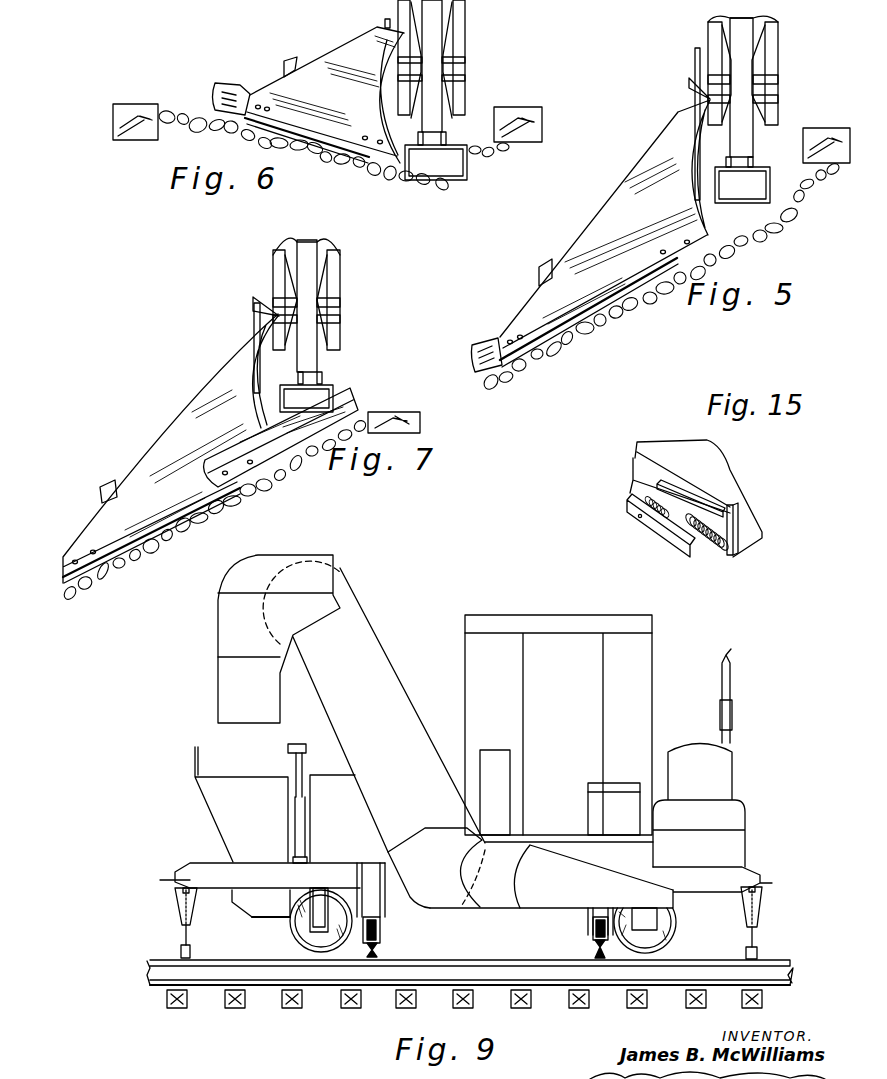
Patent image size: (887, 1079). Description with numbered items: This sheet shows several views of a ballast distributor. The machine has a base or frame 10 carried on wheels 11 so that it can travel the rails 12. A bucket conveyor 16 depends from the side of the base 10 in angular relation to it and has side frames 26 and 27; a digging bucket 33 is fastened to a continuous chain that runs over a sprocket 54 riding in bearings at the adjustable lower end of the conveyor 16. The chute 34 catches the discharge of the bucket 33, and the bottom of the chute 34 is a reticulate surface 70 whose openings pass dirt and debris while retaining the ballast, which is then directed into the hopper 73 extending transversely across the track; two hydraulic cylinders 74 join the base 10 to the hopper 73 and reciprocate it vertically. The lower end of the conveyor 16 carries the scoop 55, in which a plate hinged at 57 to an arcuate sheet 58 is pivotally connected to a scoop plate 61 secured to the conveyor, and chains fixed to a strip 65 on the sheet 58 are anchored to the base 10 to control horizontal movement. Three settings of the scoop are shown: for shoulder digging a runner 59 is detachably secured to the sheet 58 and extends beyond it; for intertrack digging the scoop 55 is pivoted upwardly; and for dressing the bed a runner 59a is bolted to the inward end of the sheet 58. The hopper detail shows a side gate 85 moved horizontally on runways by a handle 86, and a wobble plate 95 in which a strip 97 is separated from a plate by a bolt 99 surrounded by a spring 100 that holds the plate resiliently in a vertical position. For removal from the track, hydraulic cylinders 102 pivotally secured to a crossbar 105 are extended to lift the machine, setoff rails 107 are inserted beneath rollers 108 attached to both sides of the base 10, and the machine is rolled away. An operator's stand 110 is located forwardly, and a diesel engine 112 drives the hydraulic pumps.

In FIG. 9, the base or frame 10 is at (698, 888).
In FIG. 9, the wheels 11 is at (292, 928).
In FIG. 9, the rails 12 is at (792, 968).
In FIG. 9, the bucket conveyor 16 is at (381, 660).
In FIG. 7, the side frame 26 is at (273, 268).
In FIG. 7, the side frame 27 is at (340, 272).
In FIG. 6, the digging bucket 33 is at (462, 158).
In FIG. 5, the digging bucket 33 is at (768, 178).
In FIG. 9, the chute 34 is at (258, 558).
In FIG. 6, the sprocket 54 is at (440, 128).
In FIG. 9, the scoop 55 is at (572, 866).
In FIG. 5, the hinge 57 is at (689, 90).
In FIG. 6, the arcuate sheet 58 is at (363, 43).
In FIG. 5, the arcuate sheet 58 is at (657, 160).
In FIG. 7, the arcuate sheet 58 is at (197, 398).
In FIG. 6, the runner 59 is at (218, 82).
In FIG. 5, the runner 59 is at (482, 343).
In FIG. 7, the runner 59a is at (353, 410).
In FIG. 9, the scoop plate 61 is at (417, 843).
In FIG. 6, the strip 65 is at (288, 60).
In FIG. 5, the strip 65 is at (540, 265).
In FIG. 9, the reticulate surface 70 is at (222, 682).
In FIG. 9, the hopper 73 is at (218, 820).
In FIG. 9, the hydraulic cylinder 74 is at (296, 768).
In FIG. 15, the side gate 85 is at (703, 505).
In FIG. 15, the handle 86 is at (672, 492).
In FIG. 15, the wobble plate 95 is at (740, 545).
In FIG. 15, the strip 97 is at (650, 524).
In FIG. 15, the bolt 99 is at (685, 545).
In FIG. 15, the spring 100 is at (715, 545).
In FIG. 9, the hydraulic cylinder 102 is at (190, 924).
In FIG. 9, the crossbar 105 is at (180, 952).
In FIG. 9, the setoff rail 107 is at (377, 950).
In FIG. 9, the roller 108 is at (380, 928).
In FIG. 9, the operator's stand 110 is at (527, 810).
In FIG. 9, the diesel engine 112 is at (727, 764).